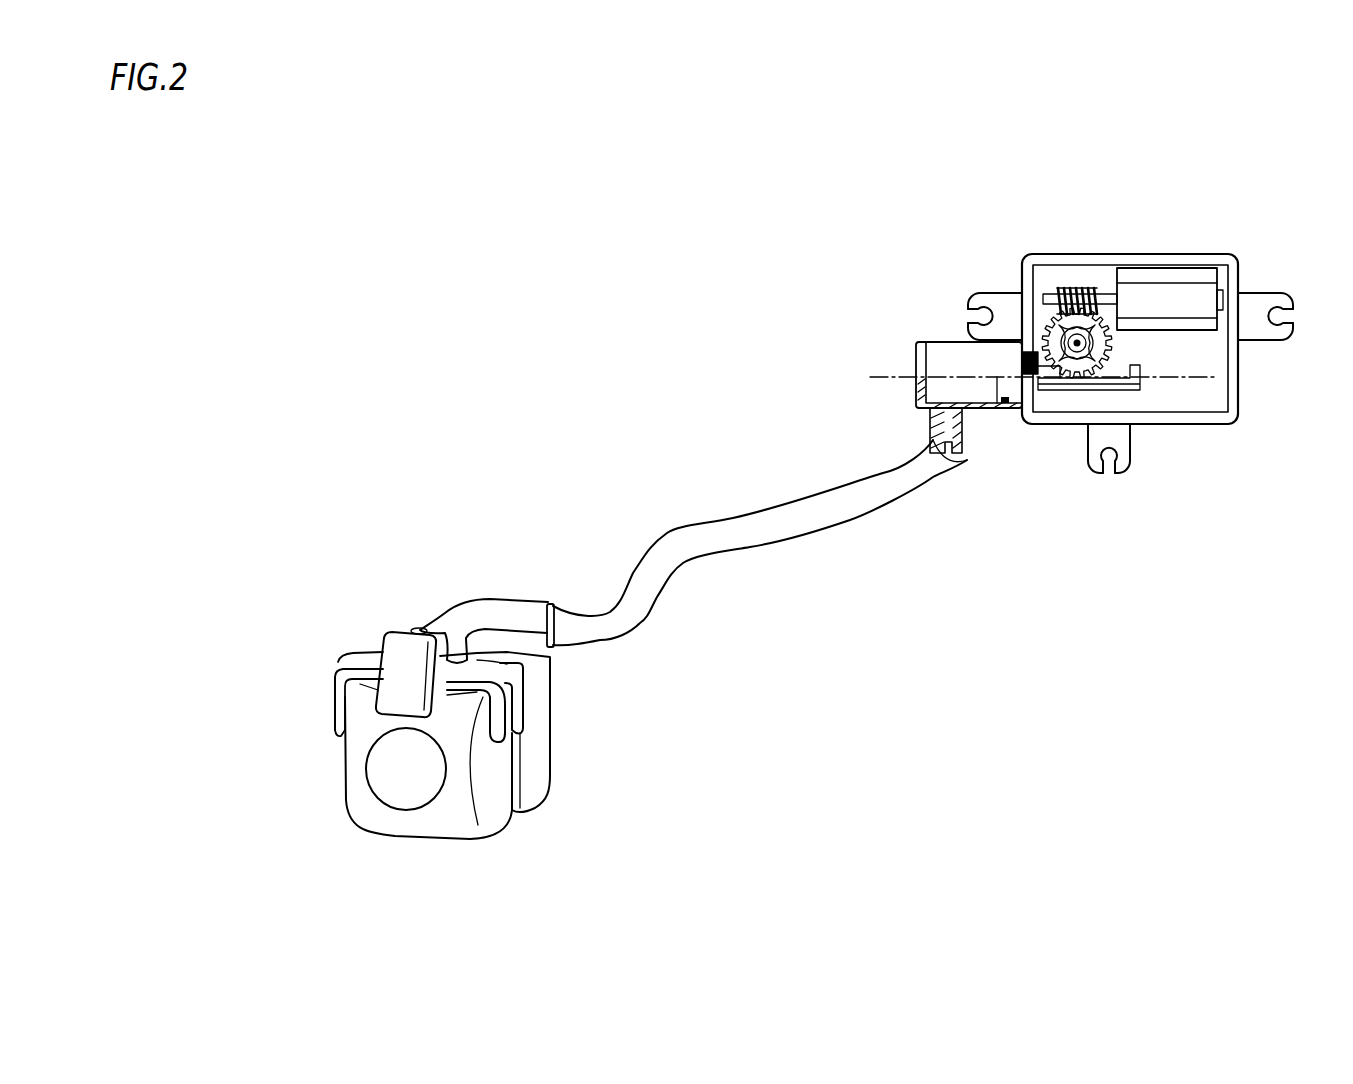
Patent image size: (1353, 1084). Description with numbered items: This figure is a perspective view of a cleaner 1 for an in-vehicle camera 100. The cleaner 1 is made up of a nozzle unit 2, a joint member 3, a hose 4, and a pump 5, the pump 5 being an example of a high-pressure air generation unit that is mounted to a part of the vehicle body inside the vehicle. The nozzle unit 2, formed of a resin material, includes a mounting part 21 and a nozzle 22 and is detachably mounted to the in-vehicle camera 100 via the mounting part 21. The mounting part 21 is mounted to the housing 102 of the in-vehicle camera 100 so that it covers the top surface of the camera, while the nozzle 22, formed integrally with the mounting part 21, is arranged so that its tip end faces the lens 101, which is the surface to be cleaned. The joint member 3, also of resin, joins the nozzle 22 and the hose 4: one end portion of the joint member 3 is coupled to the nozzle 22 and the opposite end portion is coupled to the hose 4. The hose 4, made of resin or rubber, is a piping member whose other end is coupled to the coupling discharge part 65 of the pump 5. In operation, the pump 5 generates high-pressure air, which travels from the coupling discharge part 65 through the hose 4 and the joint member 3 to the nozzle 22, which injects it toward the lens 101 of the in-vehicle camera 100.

The cleaner 1 is at (710, 382).
The nozzle unit 2 is at (362, 653).
The joint member 3 is at (501, 611).
The hose 4 is at (812, 525).
The pump 5 is at (1154, 202).
The mounting part 21 is at (503, 668).
The nozzle 22 is at (394, 633).
The coupling discharge part 65 is at (928, 446).
The in-vehicle camera 100 is at (416, 852).
The lens 101 is at (405, 763).
The housing 102 is at (460, 733).